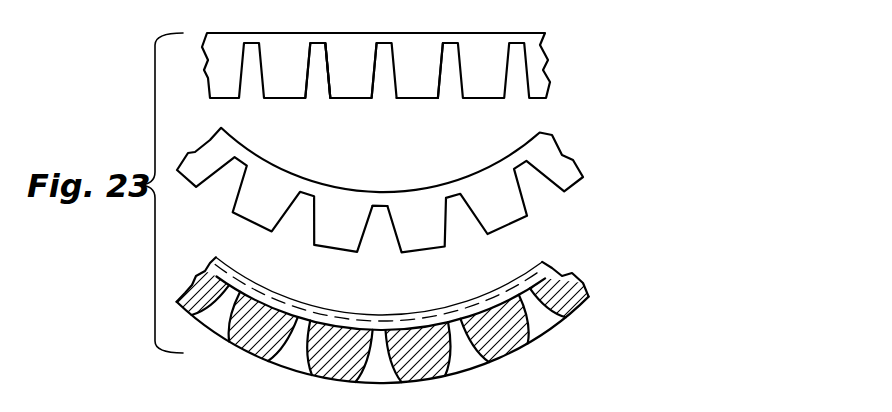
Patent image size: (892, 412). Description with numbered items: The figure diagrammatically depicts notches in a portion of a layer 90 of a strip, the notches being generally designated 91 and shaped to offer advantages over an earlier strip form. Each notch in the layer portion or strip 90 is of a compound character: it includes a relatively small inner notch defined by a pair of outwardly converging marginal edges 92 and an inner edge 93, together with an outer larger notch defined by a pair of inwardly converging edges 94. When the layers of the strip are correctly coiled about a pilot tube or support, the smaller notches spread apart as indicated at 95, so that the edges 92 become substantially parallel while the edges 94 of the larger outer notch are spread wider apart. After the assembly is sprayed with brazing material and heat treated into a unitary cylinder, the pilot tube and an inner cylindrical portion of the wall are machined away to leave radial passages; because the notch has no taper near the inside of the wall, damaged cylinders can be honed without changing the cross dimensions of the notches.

The layer of a strip 90 is at (232, 33).
The notches 91 is at (306, 82).
The outwardly converging marginal edges 92 is at (376, 50).
The inner edge 93 is at (448, 47).
The inwardly converging edges 94 is at (443, 96).
The spread-apart smaller notches 95 is at (413, 176).